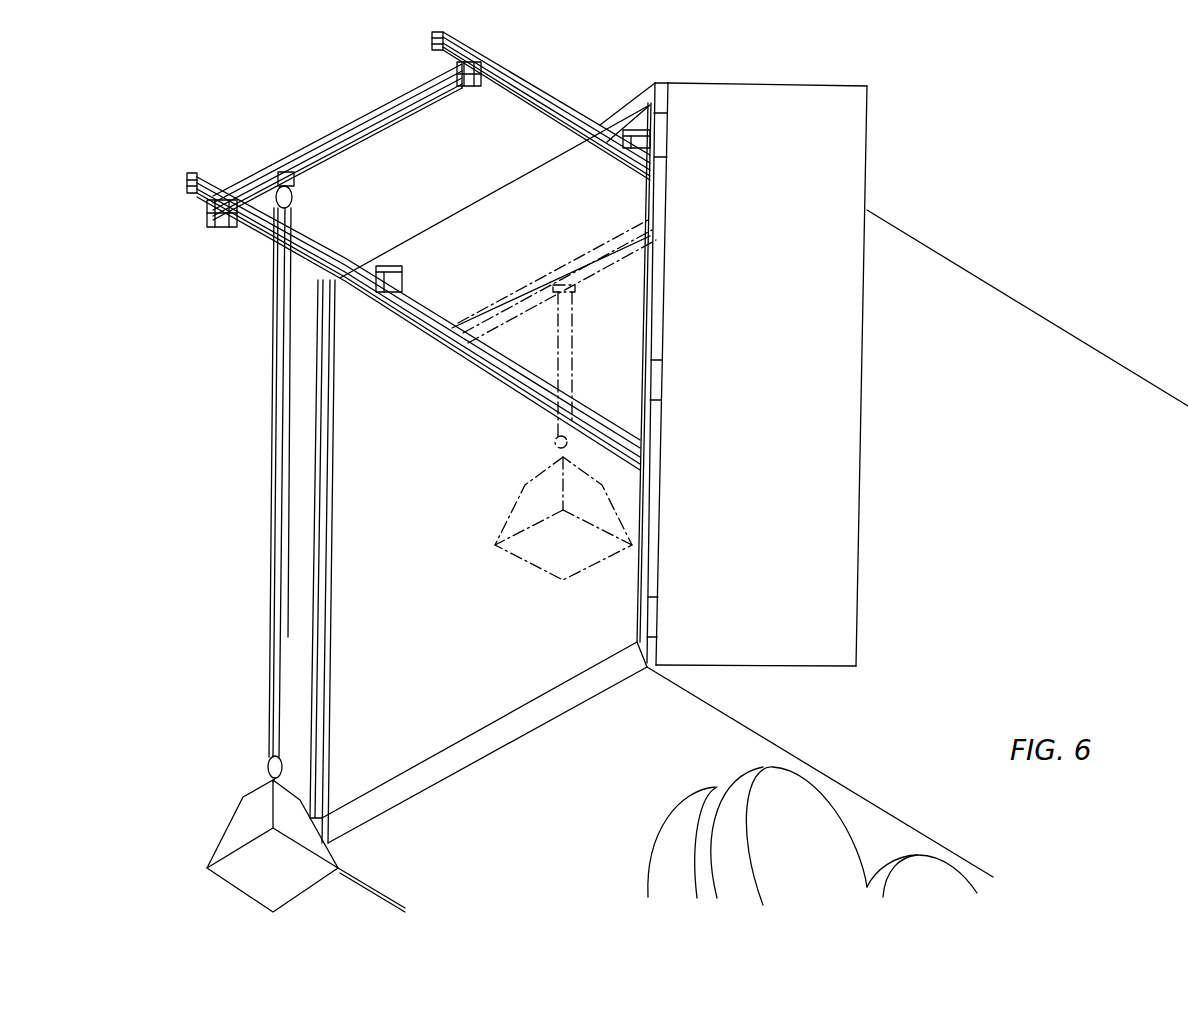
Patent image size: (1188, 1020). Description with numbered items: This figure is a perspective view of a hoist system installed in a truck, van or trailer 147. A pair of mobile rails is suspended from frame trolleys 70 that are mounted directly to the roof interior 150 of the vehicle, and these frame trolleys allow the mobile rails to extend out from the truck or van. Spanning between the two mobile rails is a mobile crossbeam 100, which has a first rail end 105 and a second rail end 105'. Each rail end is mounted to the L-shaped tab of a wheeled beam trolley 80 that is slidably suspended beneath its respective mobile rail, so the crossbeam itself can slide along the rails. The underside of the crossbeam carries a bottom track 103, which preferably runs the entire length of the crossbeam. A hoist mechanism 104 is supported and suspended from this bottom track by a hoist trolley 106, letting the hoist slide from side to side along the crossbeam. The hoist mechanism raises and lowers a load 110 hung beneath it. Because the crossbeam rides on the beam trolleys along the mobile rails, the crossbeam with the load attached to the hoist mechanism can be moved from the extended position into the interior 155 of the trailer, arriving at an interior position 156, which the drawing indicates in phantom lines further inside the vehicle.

The frame trolley 70 is at (380, 292).
The beam trolley 80 is at (228, 230).
The crossbeam 100 is at (387, 105).
The bottom track 103 is at (331, 148).
The hoist mechanism 104 is at (266, 486).
The first rail end 105 is at (530, 106).
The second rail end 105' is at (413, 293).
The hoist trolley 106 is at (283, 172).
The load 110 is at (268, 831).
The truck, van or trailer 147 is at (948, 521).
The roof interior 150 is at (496, 257).
The interior 155 is at (568, 660).
The interior position 156 is at (560, 268).